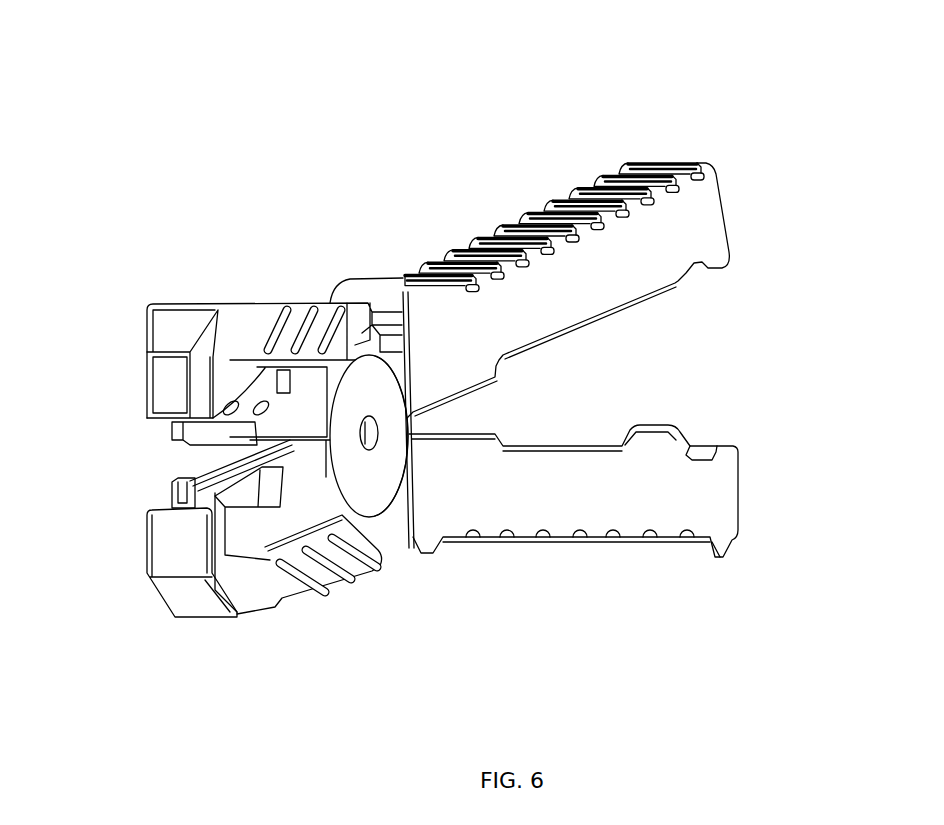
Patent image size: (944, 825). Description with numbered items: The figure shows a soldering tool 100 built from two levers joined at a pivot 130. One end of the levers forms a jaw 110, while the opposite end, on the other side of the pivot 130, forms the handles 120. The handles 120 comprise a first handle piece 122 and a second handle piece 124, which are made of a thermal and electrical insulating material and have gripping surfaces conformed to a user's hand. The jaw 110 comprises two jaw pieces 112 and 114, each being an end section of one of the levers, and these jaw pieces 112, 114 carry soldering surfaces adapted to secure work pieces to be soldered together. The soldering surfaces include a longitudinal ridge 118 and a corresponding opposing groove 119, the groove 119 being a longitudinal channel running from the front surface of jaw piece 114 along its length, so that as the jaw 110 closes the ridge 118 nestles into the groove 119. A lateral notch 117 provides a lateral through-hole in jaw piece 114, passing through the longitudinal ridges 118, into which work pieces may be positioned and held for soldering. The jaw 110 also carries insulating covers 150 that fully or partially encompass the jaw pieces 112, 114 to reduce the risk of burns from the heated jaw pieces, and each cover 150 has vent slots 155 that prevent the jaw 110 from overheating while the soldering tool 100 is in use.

The soldering tool 100 is at (728, 128).
The jaw 110 is at (100, 258).
The jaw piece 112 is at (250, 407).
The jaw piece 114 is at (243, 495).
The lateral notch 117 is at (177, 480).
The longitudinal ridge 118 is at (190, 435).
The groove 119 is at (182, 502).
The handles 120 is at (527, 125).
The first handle piece 122 is at (558, 295).
The second handle piece 124 is at (605, 488).
The pivot 130 is at (408, 422).
The insulating cover 150 is at (168, 387).
The vent slots 155 is at (298, 303).